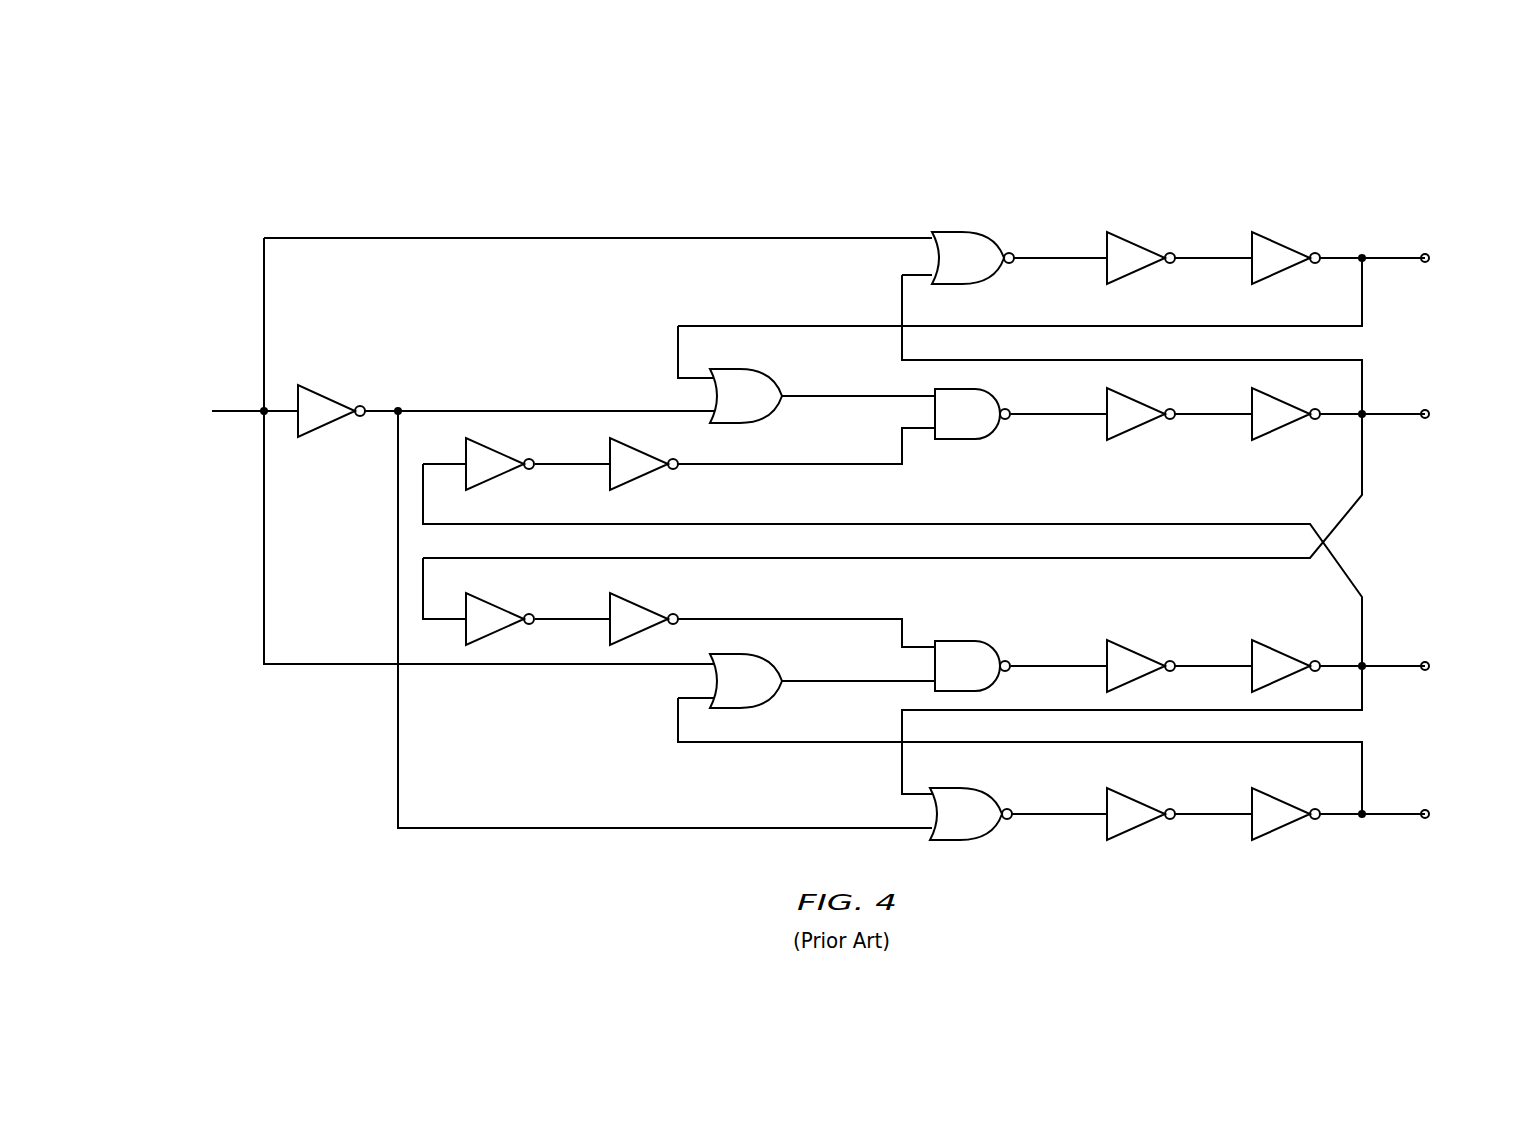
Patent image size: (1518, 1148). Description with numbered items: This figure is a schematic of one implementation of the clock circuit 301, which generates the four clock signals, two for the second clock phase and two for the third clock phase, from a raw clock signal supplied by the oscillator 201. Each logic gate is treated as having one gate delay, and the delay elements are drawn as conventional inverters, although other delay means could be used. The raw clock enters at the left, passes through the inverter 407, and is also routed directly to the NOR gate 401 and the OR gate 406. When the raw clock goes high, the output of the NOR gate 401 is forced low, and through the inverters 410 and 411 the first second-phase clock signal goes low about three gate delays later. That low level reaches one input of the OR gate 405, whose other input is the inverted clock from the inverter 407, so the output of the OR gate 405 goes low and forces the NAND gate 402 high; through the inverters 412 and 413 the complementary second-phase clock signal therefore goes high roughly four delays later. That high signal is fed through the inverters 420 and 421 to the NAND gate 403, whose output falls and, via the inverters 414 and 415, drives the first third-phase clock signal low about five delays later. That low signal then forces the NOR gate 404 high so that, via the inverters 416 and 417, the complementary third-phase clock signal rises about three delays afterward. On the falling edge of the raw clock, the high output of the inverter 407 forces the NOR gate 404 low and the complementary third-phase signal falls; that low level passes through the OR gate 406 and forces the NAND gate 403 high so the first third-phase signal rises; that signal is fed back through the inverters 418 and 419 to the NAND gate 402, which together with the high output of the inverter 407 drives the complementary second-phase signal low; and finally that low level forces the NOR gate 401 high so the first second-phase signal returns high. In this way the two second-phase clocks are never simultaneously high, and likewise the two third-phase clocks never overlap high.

The oscillator 201 is at (224, 408).
The clock circuit 301 is at (930, 195).
The NOR gate 401 is at (982, 242).
The NAND gate 402 is at (983, 431).
The NAND gate 403 is at (980, 641).
The NOR gate 404 is at (983, 798).
The OR gate 405 is at (764, 385).
The OR gate 406 is at (764, 670).
The inverter 407 is at (322, 425).
The inverter 410 is at (1133, 243).
The inverter 411 is at (1281, 243).
The inverter 412 is at (1134, 430).
The inverter 413 is at (1282, 430).
The inverter 414 is at (1133, 649).
The inverter 415 is at (1280, 649).
The inverter 416 is at (1133, 798).
The inverter 417 is at (1280, 798).
The inverter 418 is at (497, 455).
The inverter 419 is at (642, 455).
The inverter 420 is at (497, 612).
The inverter 421 is at (641, 612).